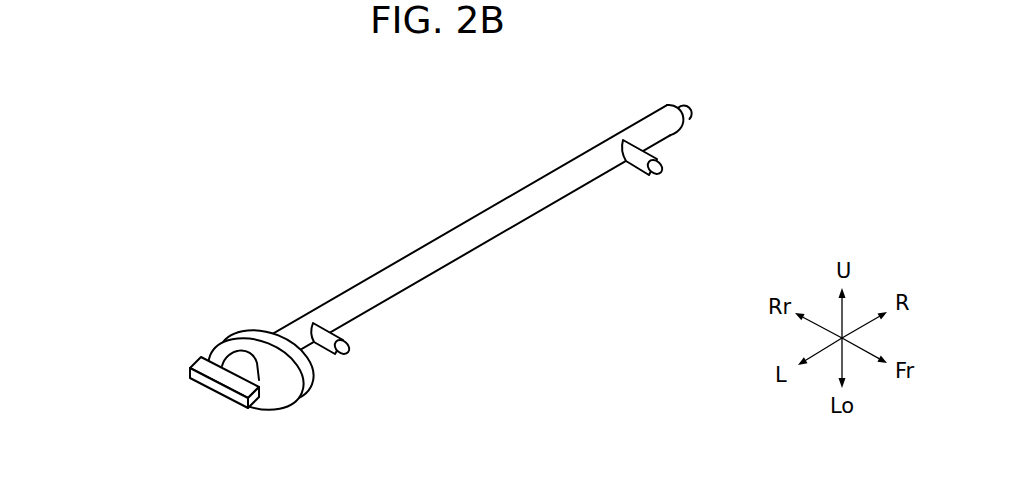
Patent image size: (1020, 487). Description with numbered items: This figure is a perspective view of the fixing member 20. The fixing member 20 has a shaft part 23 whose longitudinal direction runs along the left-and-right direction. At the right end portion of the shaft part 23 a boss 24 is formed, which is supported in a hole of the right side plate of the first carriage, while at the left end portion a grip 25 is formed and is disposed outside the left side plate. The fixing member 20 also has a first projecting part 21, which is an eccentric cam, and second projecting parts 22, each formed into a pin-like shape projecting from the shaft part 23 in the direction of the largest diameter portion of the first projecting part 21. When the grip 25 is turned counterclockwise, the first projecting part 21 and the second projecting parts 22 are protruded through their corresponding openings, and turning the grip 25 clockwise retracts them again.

The fixing member 20 is at (448, 259).
The first projecting part 21 is at (320, 389).
The second projecting parts 22 is at (351, 343).
The shaft part 23 is at (529, 237).
The boss 24 is at (689, 107).
The grip 25 is at (189, 371).